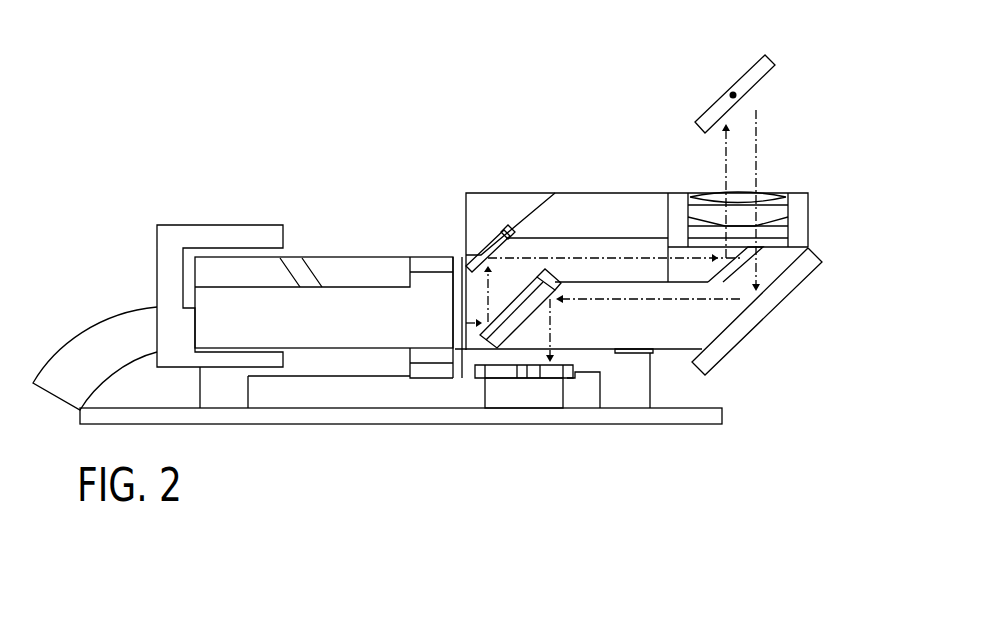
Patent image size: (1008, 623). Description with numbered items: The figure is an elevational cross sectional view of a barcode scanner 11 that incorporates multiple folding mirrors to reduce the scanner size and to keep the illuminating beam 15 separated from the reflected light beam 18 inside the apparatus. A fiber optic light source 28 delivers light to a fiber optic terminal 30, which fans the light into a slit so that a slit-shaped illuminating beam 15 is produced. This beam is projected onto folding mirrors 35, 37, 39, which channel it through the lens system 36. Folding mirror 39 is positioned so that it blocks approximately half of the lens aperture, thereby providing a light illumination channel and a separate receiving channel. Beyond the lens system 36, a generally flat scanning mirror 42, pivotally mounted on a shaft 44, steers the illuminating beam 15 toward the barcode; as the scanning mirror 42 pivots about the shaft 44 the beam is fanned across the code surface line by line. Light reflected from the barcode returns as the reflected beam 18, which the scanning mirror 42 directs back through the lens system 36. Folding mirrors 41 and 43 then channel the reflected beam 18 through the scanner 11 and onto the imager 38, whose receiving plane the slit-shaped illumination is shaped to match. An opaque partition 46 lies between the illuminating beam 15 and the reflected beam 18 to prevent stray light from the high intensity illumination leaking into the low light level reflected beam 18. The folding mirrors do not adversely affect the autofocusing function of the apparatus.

The scanner 11 is at (866, 148).
The illuminating beam 15 is at (572, 258).
The reflected light beam 18 is at (622, 299).
The fiber optic light source 28 is at (72, 373).
The fiber optic terminal 30 is at (323, 298).
The folding mirror 35 is at (500, 313).
The lens system 36 is at (765, 227).
The folding mirror 37 is at (497, 226).
The imager 38 is at (543, 398).
The folding mirror 39 is at (744, 248).
The folding mirror 41 is at (765, 318).
The scanning mirror 42 is at (750, 60).
The folding mirror 43 is at (495, 350).
The shaft 44 is at (731, 91).
The opaque partition 46 is at (603, 282).